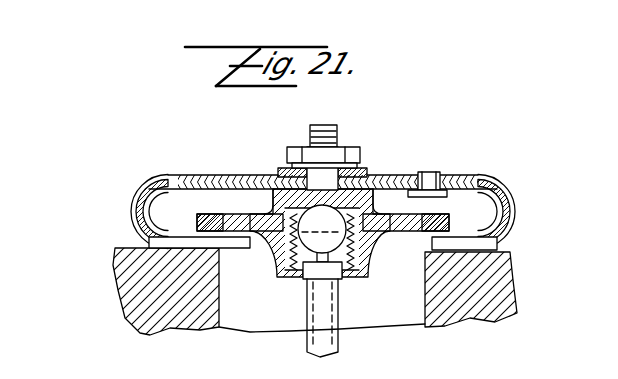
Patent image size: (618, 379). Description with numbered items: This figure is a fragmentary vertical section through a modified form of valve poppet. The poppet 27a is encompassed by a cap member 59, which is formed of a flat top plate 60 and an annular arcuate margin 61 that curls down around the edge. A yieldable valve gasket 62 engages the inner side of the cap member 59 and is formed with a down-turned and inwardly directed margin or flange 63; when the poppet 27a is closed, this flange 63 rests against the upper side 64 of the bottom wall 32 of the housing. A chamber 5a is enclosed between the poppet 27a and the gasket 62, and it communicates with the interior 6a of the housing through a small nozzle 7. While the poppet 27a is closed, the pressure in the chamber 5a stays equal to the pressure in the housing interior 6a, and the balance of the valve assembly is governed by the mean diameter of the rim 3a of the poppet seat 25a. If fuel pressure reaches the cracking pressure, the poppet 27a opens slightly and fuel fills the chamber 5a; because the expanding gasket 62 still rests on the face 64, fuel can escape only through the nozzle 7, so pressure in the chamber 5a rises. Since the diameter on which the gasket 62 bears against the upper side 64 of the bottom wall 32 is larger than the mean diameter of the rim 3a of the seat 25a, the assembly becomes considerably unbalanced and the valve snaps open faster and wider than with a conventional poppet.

The poppet 27a is at (207, 213).
The annular arcuate margin 61 is at (138, 198).
The top plate 60 is at (250, 203).
The chamber 5a is at (257, 175).
The interior of the housing 6a is at (377, 168).
The nozzle 7 is at (426, 172).
The cap member 59 is at (490, 176).
The valve gasket 62 is at (508, 188).
The margin or flange 63 is at (497, 208).
The upper side of the bottom wall 64 is at (455, 248).
The poppet seat 25a is at (418, 232).
The rim of the poppet seat 3a is at (224, 247).
The bottom wall 32 is at (497, 275).